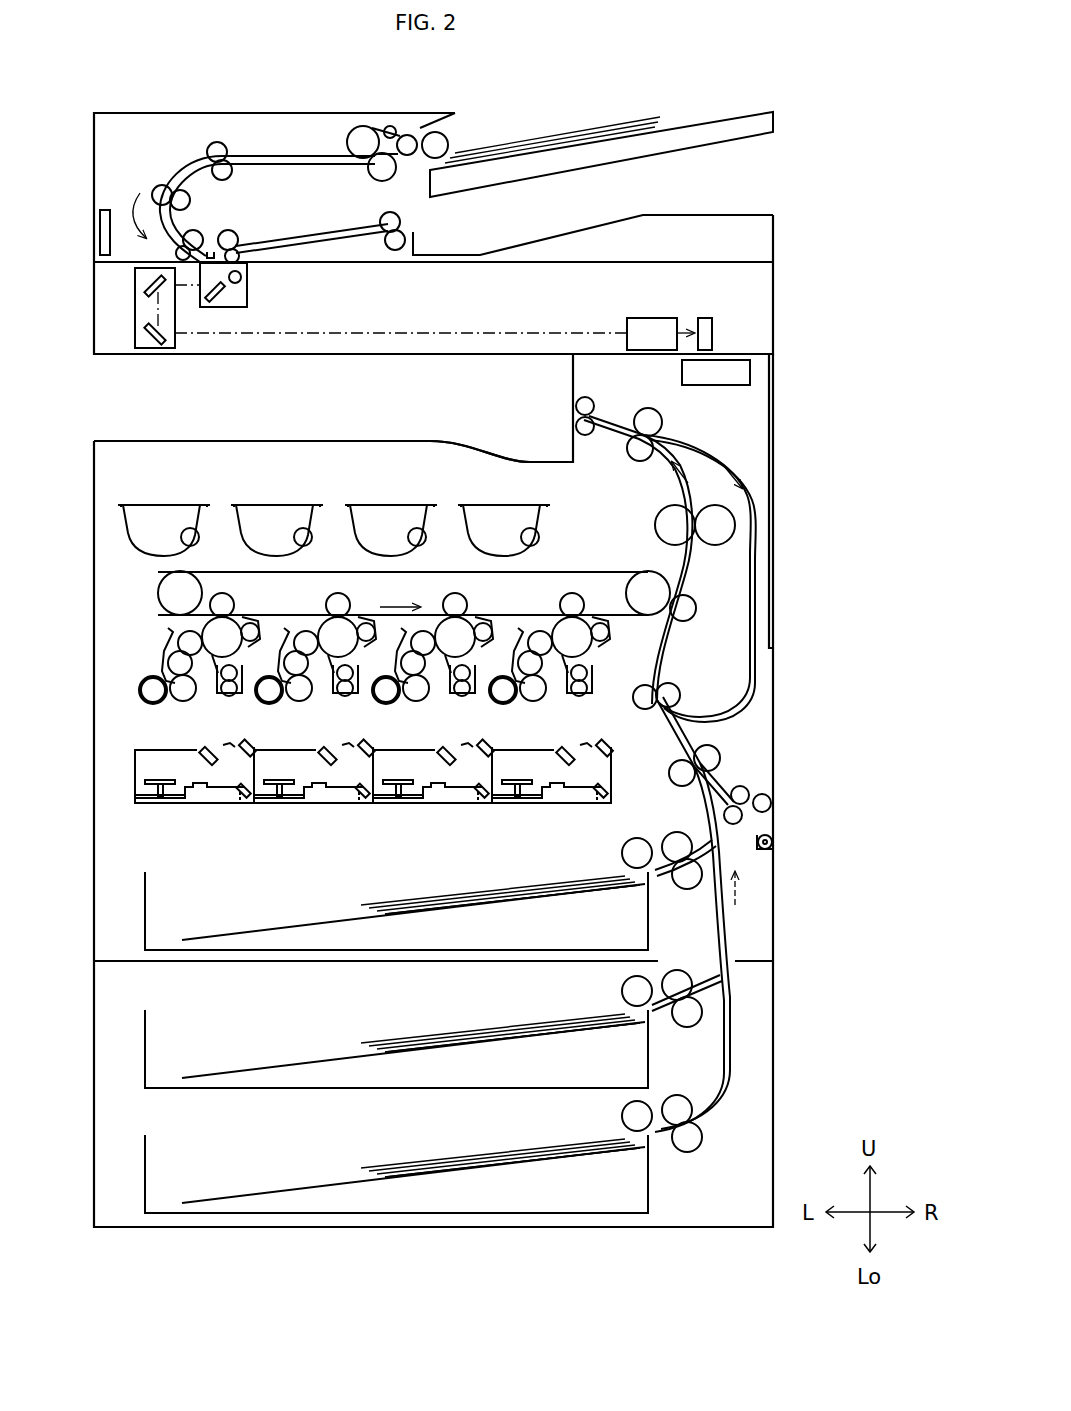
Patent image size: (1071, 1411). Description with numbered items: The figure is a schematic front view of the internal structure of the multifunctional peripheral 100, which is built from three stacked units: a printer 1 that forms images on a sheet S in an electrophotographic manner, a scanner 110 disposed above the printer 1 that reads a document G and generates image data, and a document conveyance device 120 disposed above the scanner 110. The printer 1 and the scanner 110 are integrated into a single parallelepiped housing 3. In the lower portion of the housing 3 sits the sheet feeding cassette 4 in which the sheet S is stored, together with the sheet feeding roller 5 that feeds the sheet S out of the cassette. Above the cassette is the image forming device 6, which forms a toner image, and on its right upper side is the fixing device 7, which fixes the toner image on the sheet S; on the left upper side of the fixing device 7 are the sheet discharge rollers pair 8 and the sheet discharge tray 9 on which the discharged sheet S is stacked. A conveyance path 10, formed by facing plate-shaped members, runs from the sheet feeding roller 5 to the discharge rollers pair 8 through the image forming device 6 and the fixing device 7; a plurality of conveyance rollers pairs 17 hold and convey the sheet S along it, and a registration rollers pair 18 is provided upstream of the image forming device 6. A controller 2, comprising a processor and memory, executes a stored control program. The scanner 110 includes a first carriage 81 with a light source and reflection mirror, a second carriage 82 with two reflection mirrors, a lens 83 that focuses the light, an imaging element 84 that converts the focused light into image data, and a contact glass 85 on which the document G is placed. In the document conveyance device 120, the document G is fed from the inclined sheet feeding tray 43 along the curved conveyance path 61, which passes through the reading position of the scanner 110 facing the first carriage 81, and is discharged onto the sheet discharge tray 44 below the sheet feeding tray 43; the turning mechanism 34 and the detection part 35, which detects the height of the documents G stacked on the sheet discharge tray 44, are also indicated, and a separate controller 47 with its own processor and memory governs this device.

The multifunctional peripheral 100 is at (834, 97).
The document conveyance device 120 is at (461, 164).
The scanner 110 is at (468, 306).
The printer 1 is at (796, 398).
The controller 2 is at (725, 385).
The housing 3 is at (93, 462).
The sheet feeding cassette 4 is at (650, 935).
The sheet feeding roller 5 is at (621, 848).
The image forming device 6 is at (140, 570).
The fixing device 7 is at (702, 553).
The sheet discharge rollers pair 8 is at (598, 408).
The sheet discharge tray 9 is at (285, 440).
The conveyance path 10 is at (732, 1008).
The conveyance rollers pairs 17 is at (664, 421).
The registration rollers pair 18 is at (680, 692).
The turning mechanism 34 is at (414, 127).
The detection part 35 is at (186, 150).
The sheet feeding tray 43 is at (601, 132).
The sheet discharge tray 44 is at (725, 215).
The controller 47 is at (100, 225).
The conveyance path 61 is at (186, 188).
The first carriage 81 is at (247, 292).
The second carriage 82 is at (135, 300).
The lens 83 is at (652, 318).
The imaging element 84 is at (705, 318).
The contact glass 85 is at (606, 266).
The document G is at (648, 121).
The sheet S is at (382, 904).